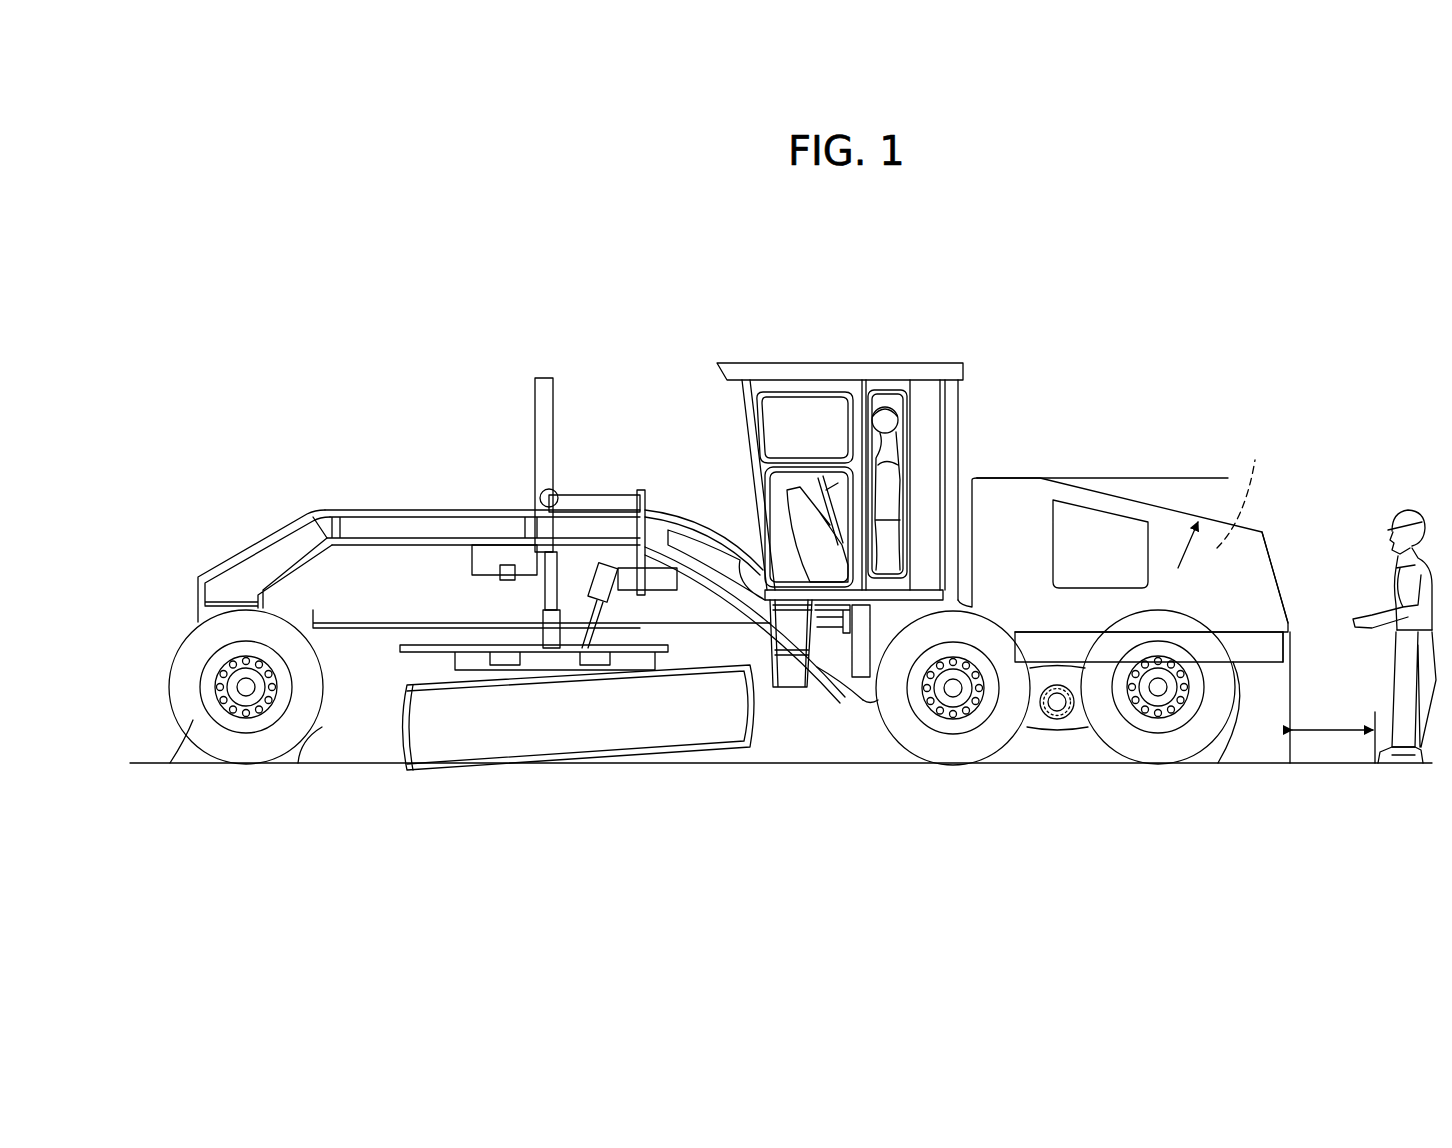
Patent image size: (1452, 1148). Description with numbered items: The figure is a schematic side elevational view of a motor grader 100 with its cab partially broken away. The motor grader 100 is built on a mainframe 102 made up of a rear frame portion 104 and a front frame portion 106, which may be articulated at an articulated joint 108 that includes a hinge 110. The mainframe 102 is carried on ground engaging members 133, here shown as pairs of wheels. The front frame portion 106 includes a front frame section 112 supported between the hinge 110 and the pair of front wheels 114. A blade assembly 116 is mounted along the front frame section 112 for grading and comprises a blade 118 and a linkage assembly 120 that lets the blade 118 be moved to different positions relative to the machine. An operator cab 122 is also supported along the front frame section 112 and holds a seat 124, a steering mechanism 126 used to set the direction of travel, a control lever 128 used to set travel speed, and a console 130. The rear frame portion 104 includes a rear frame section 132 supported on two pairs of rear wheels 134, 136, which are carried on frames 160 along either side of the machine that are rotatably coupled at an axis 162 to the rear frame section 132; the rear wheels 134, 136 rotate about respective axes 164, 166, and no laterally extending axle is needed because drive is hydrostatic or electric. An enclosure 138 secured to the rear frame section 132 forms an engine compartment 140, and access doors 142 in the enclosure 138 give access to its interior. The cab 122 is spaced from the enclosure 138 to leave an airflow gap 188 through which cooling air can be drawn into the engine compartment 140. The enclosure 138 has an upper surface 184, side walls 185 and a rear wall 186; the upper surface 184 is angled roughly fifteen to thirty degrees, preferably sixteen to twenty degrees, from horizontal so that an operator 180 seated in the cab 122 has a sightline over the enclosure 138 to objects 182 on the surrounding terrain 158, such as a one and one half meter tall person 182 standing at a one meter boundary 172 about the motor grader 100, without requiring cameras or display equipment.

The motor grader 100 is at (688, 300).
The mainframe 102 is at (190, 595).
The rear frame portion 104 is at (1218, 763).
The front frame portion 106 is at (420, 510).
The articulated joint 108 is at (873, 693).
The hinge 110 is at (873, 698).
The front frame section 112 is at (318, 505).
The front wheels 114 is at (317, 727).
The blade assembly 116 is at (553, 773).
The blade 118 is at (578, 729).
The linkage assembly 120 is at (583, 497).
The operator cab 122 is at (838, 363).
The seat 124 is at (972, 500).
The steering mechanism 126 is at (800, 482).
The control lever 128 is at (830, 488).
The console 130 is at (797, 543).
The rear frame section 132 is at (1270, 670).
The ground contact 133 is at (303, 750).
The rear wheels 134 is at (1028, 737).
The rear wheels 136 is at (1088, 737).
The enclosure 138 is at (1262, 531).
The engine compartment 140 is at (1127, 490).
The access doors 142 is at (1103, 522).
The surrounding terrain 158 is at (175, 763).
The frames 160 is at (1042, 690).
The axis 162 is at (1054, 700).
The axis 164 is at (955, 690).
The axis 166 is at (1158, 690).
The one meter boundary 172 is at (1332, 715).
The operator 180 is at (884, 410).
The object 182 is at (1404, 509).
The upper surface 184 is at (1205, 475).
The side walls 185 is at (1250, 598).
The rear wall 186 is at (1280, 572).
The airflow gap 188 is at (960, 505).